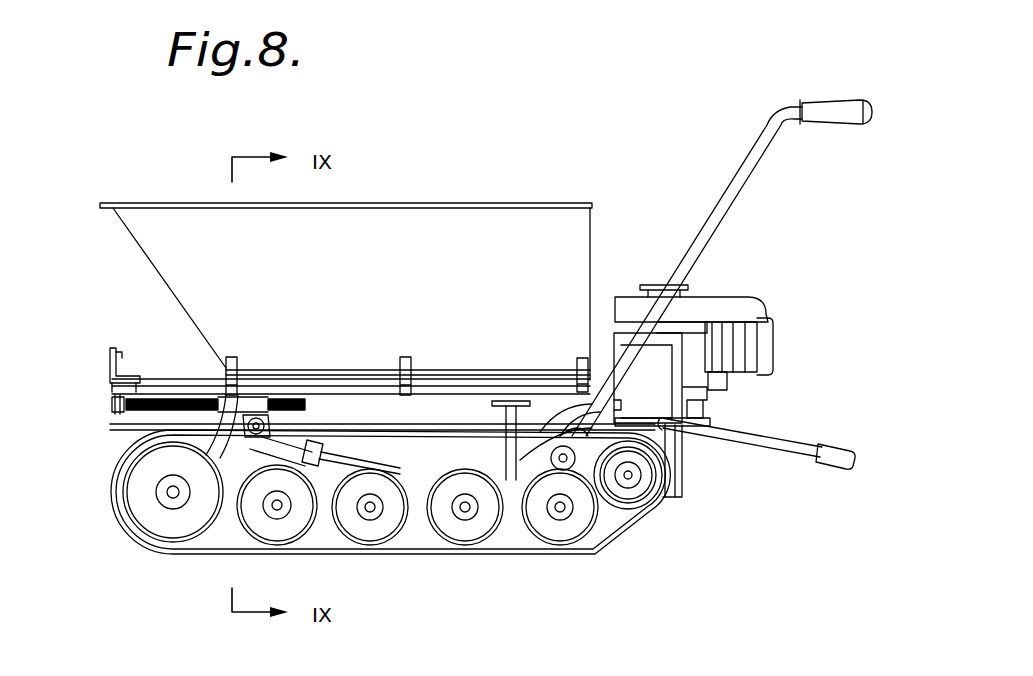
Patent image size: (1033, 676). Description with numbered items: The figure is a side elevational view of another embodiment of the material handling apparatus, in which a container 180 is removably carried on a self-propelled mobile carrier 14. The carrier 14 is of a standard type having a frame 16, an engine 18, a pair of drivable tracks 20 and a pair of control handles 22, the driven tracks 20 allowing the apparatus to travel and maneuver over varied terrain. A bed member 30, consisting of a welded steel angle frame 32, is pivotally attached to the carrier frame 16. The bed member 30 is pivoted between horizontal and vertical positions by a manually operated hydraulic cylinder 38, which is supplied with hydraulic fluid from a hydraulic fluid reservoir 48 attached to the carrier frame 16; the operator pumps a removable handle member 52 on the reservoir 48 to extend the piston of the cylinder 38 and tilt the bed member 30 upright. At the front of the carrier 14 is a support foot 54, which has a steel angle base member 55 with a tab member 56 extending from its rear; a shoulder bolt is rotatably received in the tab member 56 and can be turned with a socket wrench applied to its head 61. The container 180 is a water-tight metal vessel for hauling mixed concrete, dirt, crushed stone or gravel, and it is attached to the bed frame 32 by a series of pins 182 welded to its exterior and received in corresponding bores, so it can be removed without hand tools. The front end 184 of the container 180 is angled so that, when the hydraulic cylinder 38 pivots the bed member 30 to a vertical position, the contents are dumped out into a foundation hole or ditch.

The mobile carrier 14 is at (742, 404).
The frame 16 is at (676, 493).
The engine 18 is at (749, 287).
The drivable tracks 20 is at (128, 527).
The control handles 22 is at (827, 103).
The bed member 30 is at (597, 380).
The frame 32 is at (433, 373).
The hydraulic cylinder 38 is at (402, 462).
The hydraulic fluid reservoir 48 is at (664, 411).
The handle member 52 is at (772, 450).
The support foot 54 is at (92, 356).
The base member 55 is at (118, 356).
The tab member 56 is at (127, 410).
The head 61 is at (108, 398).
The container 180 is at (420, 283).
The pins 182 is at (238, 357).
The front end 184 is at (142, 270).